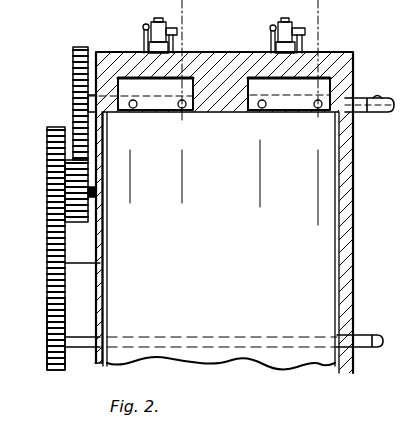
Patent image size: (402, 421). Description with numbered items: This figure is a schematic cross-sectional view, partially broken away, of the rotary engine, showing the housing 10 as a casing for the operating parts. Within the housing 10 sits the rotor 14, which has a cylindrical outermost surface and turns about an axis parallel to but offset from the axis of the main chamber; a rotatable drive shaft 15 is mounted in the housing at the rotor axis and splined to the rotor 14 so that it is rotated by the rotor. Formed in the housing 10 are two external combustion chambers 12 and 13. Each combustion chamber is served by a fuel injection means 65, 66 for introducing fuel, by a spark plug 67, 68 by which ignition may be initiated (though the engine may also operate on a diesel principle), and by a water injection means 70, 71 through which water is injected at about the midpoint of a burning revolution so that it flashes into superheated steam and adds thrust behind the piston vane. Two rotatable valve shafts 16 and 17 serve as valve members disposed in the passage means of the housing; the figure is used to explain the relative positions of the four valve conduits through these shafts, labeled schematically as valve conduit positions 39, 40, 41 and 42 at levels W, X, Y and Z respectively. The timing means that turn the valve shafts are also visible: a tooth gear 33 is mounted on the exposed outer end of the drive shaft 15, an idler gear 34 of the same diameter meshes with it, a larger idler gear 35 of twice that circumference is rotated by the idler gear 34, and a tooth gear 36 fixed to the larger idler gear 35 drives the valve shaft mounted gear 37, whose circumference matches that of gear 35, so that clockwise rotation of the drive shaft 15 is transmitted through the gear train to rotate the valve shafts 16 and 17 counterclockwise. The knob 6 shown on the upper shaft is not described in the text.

The knob 6 is at (375, 96).
The housing 10 is at (349, 259).
The combustion chamber 12 is at (148, 91).
The combustion chamber 13 is at (284, 93).
The rotor 14 is at (214, 249).
The drive shaft 15 is at (220, 338).
The valve shaft 16 is at (360, 110).
The valve shaft 17 is at (339, 378).
The tooth gear 33 is at (66, 363).
The idler gear 34 is at (100, 263).
The larger idler gear 35 is at (55, 127).
The tooth gear 36 is at (80, 223).
The valve shaft mounted gear 37 is at (73, 62).
The valve conduit position 39 is at (133, 108).
The valve conduit position 40 is at (182, 108).
The valve conduit position 41 is at (260, 108).
The valve conduit position 42 is at (317, 108).
The fuel injection means 65 is at (177, 31).
The fuel injection means 66 is at (305, 31).
The spark plug 67 is at (157, 20).
The spark plug 68 is at (285, 22).
The water injection means 70 is at (143, 38).
The water injection means 71 is at (273, 28).